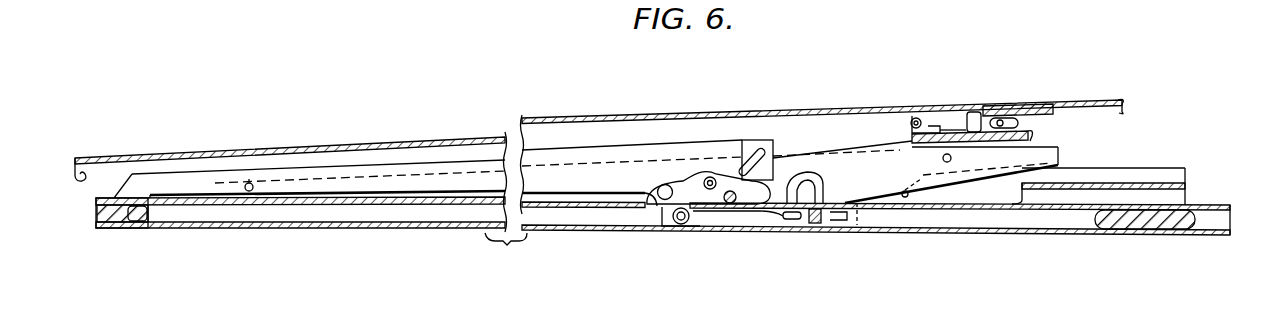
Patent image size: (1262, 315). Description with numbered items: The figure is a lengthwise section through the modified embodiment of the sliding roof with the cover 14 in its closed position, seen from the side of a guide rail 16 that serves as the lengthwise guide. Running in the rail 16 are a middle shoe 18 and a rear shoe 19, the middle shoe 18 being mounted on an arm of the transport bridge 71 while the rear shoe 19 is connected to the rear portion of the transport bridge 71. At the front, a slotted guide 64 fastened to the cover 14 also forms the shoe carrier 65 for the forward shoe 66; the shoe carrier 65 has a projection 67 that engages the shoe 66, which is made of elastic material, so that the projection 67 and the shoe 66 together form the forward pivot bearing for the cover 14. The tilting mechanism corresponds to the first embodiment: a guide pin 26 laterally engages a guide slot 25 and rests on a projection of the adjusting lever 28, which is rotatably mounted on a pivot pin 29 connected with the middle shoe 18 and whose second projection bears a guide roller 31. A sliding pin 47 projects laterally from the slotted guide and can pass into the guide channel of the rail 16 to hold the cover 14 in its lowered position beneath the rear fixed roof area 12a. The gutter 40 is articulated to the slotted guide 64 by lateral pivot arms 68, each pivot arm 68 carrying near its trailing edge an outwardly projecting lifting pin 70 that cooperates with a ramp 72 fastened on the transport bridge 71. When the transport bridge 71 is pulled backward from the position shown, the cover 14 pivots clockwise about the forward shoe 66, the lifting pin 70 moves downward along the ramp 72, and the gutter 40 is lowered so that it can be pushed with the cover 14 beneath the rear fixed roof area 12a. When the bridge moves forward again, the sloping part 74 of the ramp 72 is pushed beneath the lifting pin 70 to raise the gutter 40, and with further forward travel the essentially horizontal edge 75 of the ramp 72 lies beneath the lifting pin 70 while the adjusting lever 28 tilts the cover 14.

The rear fixed roof area 12a is at (1082, 101).
The rigid cover 14 is at (553, 117).
The guide rail 16 is at (590, 232).
The middle shoe 18 is at (800, 222).
The rear shoe 19 is at (1118, 224).
The guide slot 25 is at (748, 158).
The guide pin 26 is at (690, 179).
The adjusting lever 28 is at (789, 181).
The pivot pin 29 is at (816, 223).
The guide roller 31 is at (686, 225).
The gutter 40 is at (956, 125).
The sliding pin 47 is at (664, 214).
The slotted guide 64 is at (634, 150).
The shoe carrier 65 is at (123, 185).
The forward shoe 66 is at (108, 228).
The projection 67 is at (143, 222).
The pivot arm 68 is at (860, 156).
The lifting pin 70 is at (942, 159).
The transport bridge 71 is at (1143, 183).
The ramp 72 is at (997, 211).
The sloping part 74 is at (912, 194).
The essentially horizontal edge 75 is at (1090, 168).